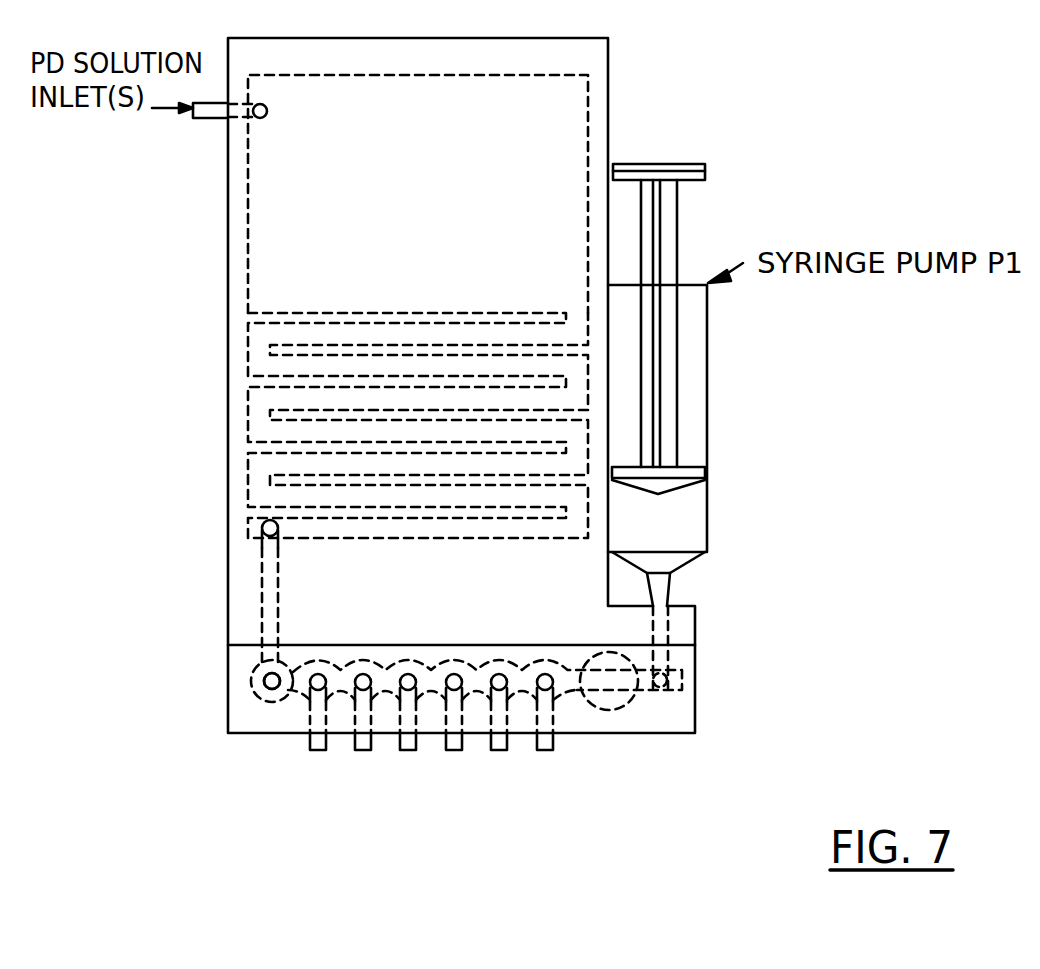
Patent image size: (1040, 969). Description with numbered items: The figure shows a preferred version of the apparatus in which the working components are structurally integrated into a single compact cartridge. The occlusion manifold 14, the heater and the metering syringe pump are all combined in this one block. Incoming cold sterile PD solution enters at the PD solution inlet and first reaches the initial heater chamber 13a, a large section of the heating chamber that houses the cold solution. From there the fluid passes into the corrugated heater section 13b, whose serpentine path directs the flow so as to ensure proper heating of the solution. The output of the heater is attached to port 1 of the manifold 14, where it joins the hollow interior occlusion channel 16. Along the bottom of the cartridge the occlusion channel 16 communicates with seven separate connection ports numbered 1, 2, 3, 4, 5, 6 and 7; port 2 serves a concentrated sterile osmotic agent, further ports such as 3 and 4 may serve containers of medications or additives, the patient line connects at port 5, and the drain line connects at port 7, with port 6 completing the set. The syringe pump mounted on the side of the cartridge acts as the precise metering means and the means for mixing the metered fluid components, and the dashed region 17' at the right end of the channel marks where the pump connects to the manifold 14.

The occlusion manifold 14 is at (228, 265).
The initial heater chamber 13a is at (288, 210).
The corrugated heater section 13b is at (268, 399).
The occlusion channel 16 is at (255, 688).
The syringe pump connection port 17' is at (667, 665).
The port 1 is at (270, 736).
The port 2 is at (318, 736).
The port 3 is at (363, 736).
The port 4 is at (408, 736).
The port 5 is at (454, 736).
The port 6 is at (499, 736).
The port 7 is at (545, 736).